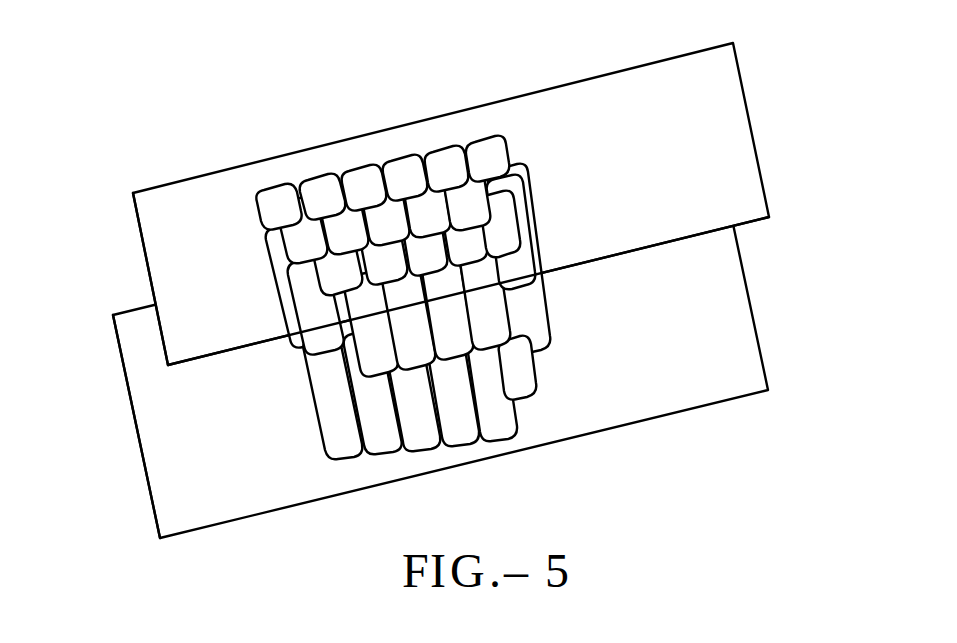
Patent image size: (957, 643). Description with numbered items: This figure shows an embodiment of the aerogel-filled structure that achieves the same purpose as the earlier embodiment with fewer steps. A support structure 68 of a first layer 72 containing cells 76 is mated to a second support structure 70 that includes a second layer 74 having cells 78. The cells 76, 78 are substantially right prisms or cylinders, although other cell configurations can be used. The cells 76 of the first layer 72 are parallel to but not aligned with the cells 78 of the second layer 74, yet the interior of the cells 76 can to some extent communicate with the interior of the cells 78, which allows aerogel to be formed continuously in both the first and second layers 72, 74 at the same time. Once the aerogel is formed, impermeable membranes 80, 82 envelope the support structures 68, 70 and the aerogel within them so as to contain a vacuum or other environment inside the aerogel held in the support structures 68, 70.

The support structure 68 is at (530, 220).
The second support structure 70 is at (547, 317).
The first layer 72 is at (760, 74).
The second layer 74 is at (763, 281).
The cell 76 is at (266, 209).
The cells 78 is at (327, 418).
The impermeable membrane 80 is at (148, 263).
The impermeable membrane 82 is at (143, 472).